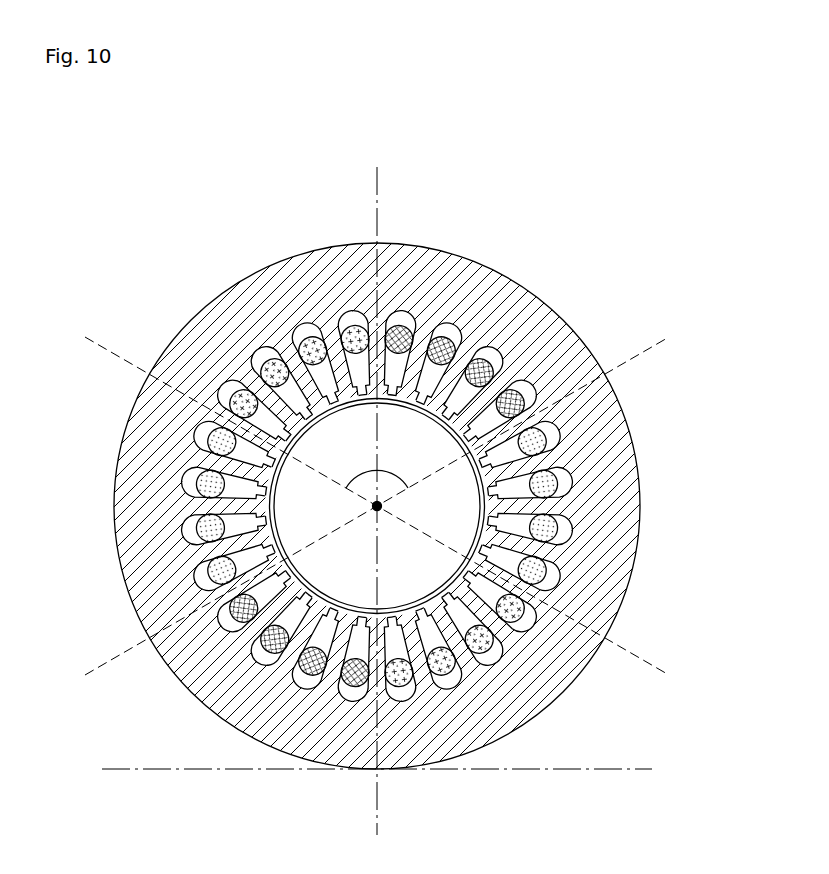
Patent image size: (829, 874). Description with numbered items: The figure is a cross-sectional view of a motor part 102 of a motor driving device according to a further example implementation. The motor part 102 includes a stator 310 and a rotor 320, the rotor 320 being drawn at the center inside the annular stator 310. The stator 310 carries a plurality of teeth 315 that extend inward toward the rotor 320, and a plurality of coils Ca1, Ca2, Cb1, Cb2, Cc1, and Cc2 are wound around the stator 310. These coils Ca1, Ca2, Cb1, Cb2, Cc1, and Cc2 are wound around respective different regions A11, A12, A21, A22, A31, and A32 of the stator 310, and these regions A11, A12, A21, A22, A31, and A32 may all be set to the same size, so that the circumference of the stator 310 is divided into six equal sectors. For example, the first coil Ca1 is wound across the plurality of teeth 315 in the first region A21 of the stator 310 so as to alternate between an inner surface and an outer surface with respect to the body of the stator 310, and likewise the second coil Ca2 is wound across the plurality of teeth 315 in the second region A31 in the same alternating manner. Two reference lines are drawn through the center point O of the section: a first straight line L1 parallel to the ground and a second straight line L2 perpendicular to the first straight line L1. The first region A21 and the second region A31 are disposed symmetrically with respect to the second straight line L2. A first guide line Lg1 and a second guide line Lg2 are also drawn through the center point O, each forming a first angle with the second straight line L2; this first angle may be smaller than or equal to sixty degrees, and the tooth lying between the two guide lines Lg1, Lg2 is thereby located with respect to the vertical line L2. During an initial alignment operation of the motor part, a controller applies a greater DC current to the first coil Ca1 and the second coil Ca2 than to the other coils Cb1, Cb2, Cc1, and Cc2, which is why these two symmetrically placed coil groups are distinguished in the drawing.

The motor part 102 is at (398, 96).
The stator 310 is at (470, 282).
The teeth 315 is at (497, 385).
The rotor 320 is at (457, 503).
The first coil Ca1 is at (532, 442).
The second coil Ca2 is at (222, 442).
The coil Cb1 is at (399, 340).
The coil Cb2 is at (244, 608).
The coil Cc1 is at (510, 608).
The coil Cc2 is at (355, 340).
The first straight line L1 is at (393, 770).
The second straight line L2 is at (377, 489).
The first guide line Lg1 is at (398, 496).
The second guide line Lg2 is at (357, 496).
The center point O is at (388, 515).
The region A11 is at (174, 194).
The region A12 is at (574, 190).
The first region A21 is at (706, 536).
The region A22 is at (576, 728).
The second region A31 is at (71, 505).
The region A32 is at (169, 726).